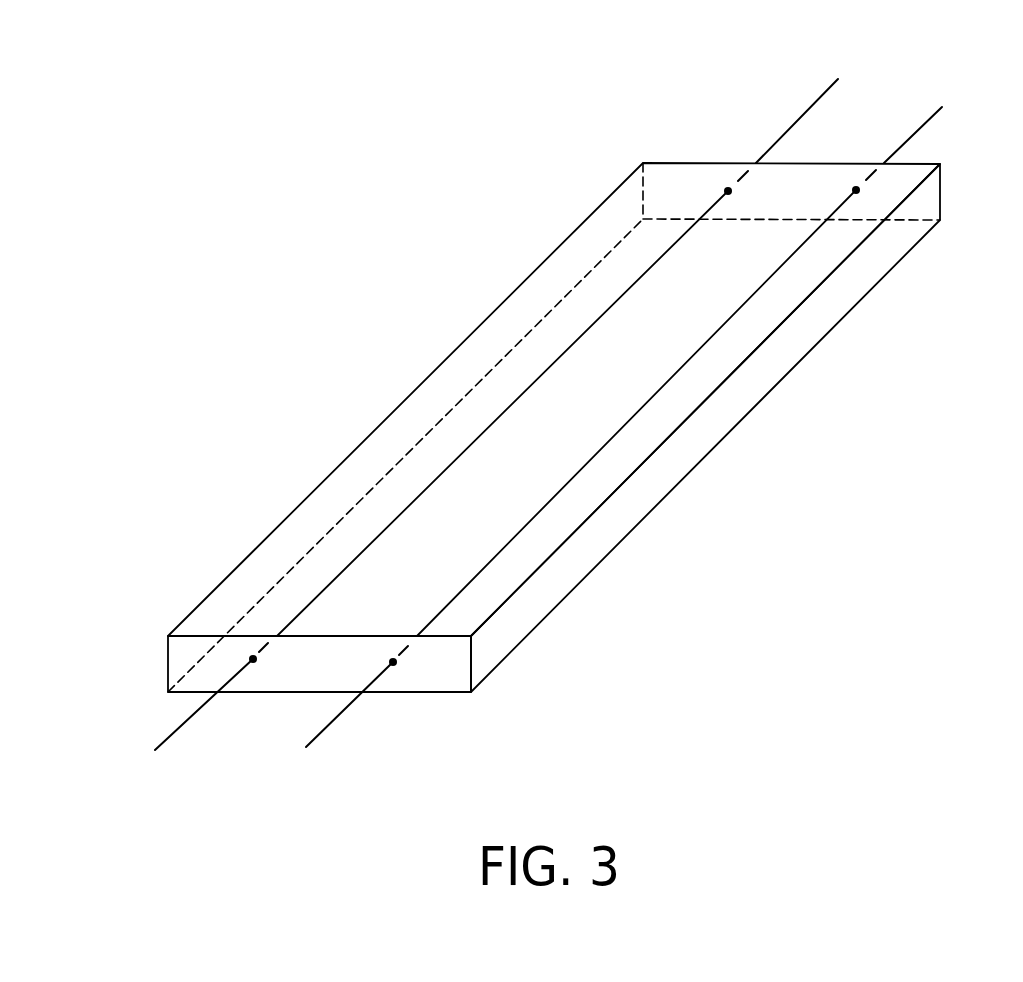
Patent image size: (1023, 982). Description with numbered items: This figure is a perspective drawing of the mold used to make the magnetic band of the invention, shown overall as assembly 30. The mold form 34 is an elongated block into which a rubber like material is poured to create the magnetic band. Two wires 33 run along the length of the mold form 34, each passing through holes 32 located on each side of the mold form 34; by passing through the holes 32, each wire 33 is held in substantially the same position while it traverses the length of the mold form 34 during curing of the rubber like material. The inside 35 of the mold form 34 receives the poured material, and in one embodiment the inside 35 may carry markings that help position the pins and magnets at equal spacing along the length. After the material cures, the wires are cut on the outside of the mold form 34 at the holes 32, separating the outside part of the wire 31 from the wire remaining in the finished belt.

The optical fiber ribbon / slab assembly 30 is at (548, 416).
The outside part of the wire 31 is at (345, 703).
The holes 32 is at (393, 662).
The wire 33 is at (565, 485).
The mold form 34 is at (443, 667).
The inside of the mold form 35 is at (682, 313).